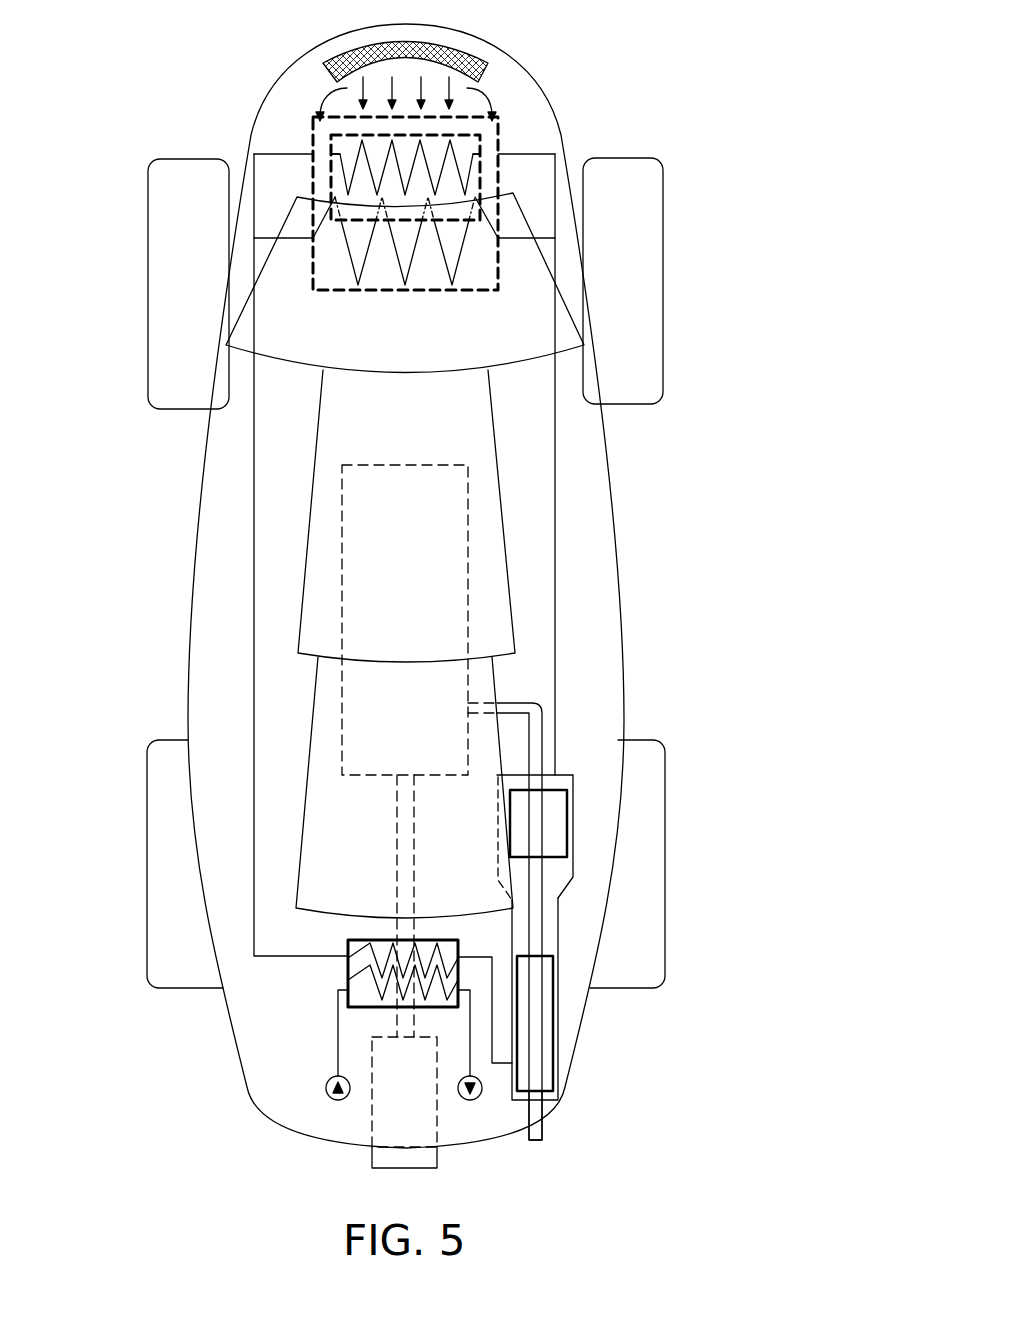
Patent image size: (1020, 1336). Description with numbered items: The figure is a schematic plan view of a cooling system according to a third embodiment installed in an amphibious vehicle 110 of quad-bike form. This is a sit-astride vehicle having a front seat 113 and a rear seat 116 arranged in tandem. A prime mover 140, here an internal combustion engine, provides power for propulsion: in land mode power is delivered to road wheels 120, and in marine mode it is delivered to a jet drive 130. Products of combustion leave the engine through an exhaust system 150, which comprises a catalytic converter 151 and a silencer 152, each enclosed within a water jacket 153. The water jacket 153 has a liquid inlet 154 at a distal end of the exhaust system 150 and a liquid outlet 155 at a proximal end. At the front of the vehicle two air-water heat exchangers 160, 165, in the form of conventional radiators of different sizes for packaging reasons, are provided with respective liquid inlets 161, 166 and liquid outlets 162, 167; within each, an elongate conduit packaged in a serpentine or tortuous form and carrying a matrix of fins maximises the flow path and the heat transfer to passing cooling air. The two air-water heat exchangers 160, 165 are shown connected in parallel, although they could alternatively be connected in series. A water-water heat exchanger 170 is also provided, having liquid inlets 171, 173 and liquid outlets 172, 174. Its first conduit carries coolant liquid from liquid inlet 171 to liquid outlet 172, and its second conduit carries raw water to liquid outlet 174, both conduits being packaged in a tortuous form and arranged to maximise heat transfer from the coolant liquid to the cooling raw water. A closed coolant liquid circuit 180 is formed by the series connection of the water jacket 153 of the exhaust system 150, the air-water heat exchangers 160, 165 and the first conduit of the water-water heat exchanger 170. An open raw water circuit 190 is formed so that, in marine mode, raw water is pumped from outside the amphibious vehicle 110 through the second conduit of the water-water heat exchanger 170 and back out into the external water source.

The amphibious vehicle 110 is at (548, 64).
The road wheels 120 is at (663, 166).
The air-water heat exchanger 160 is at (327, 93).
The liquid inlet 161 is at (497, 140).
The liquid outlet 162 is at (313, 140).
The air-water heat exchanger 165 is at (364, 302).
The liquid inlet 166 is at (499, 240).
The liquid outlet 167 is at (312, 240).
The closed coolant liquid circuit 180 is at (556, 658).
The front seat 113 is at (318, 443).
The rear seat 116 is at (305, 853).
The prime mover 140 is at (345, 590).
The liquid inlet 171 is at (463, 953).
The liquid outlet 155 is at (558, 775).
The catalytic converter 151 is at (560, 822).
The exhaust system 150 is at (561, 1032).
The silencer 152 is at (547, 1013).
The water jacket 153 is at (553, 1093).
The liquid inlet 154 is at (510, 1069).
The liquid outlet 174 is at (460, 988).
The water-water heat exchanger 170 is at (340, 998).
The liquid outlet 172 is at (348, 952).
The liquid inlet 173 is at (348, 984).
The open raw water circuit 190 is at (338, 1062).
The jet drive 130 is at (372, 1160).